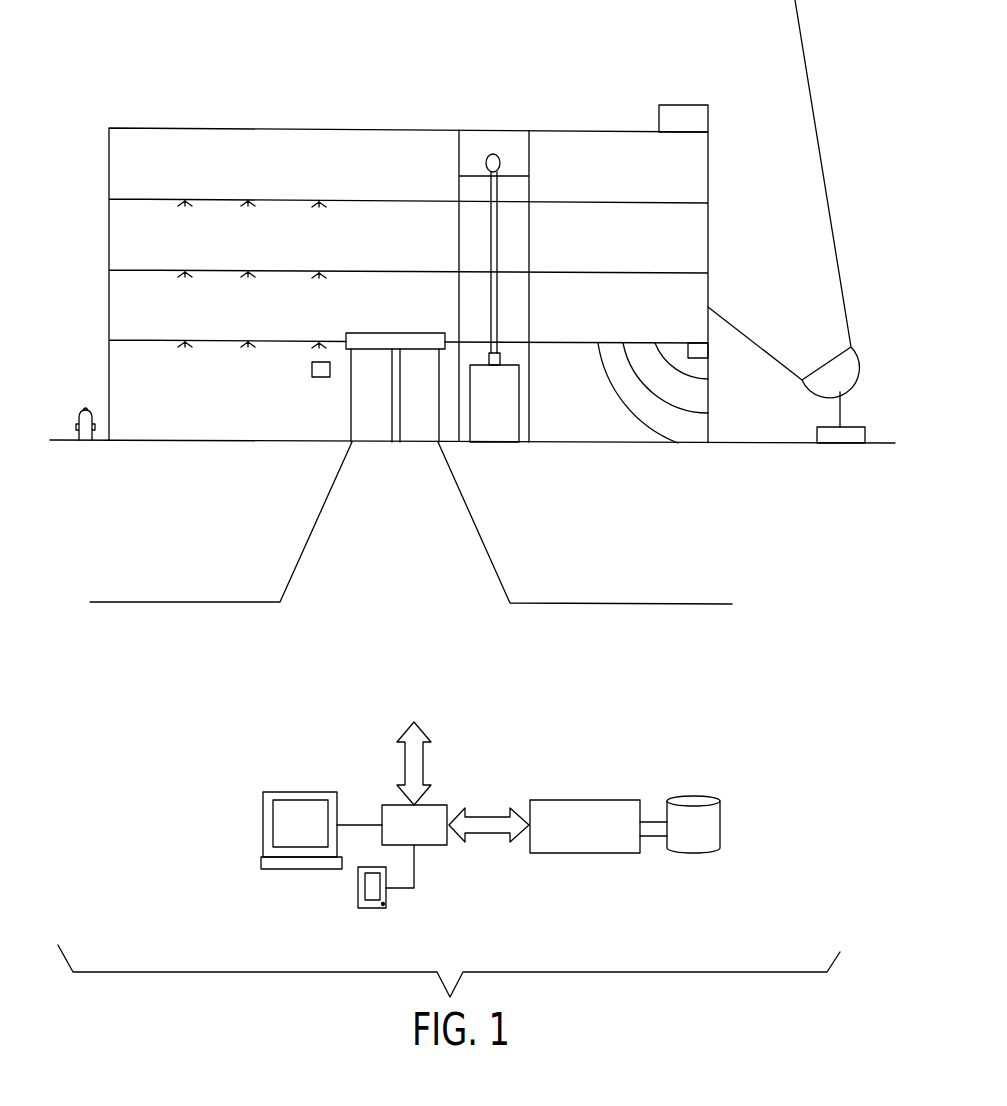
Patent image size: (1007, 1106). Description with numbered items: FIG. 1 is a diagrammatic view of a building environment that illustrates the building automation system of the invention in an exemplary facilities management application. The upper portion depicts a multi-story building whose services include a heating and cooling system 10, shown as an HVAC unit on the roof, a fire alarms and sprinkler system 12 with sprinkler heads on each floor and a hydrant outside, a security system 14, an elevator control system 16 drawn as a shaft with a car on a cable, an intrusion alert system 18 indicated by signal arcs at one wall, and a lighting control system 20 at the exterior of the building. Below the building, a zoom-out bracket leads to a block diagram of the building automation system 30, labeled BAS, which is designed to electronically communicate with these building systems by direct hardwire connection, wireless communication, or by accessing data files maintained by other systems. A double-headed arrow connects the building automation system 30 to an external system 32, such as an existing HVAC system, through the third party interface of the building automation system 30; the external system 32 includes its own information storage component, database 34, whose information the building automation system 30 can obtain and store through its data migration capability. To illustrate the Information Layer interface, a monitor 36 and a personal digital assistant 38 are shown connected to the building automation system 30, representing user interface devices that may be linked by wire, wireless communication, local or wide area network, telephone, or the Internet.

The heating and cooling system 10 is at (686, 105).
The fire alarms and sprinkler system 12 is at (95, 382).
The security system 14 is at (311, 369).
The elevator control system 16 is at (483, 130).
The intrusion alert system 18 is at (710, 350).
The lighting control system 20 is at (843, 446).
The building automation system 30 is at (441, 805).
The external system 32 is at (582, 800).
The database 34 is at (696, 854).
The monitor 36 is at (300, 792).
The personal digital assistant (PDA) 38 is at (358, 888).